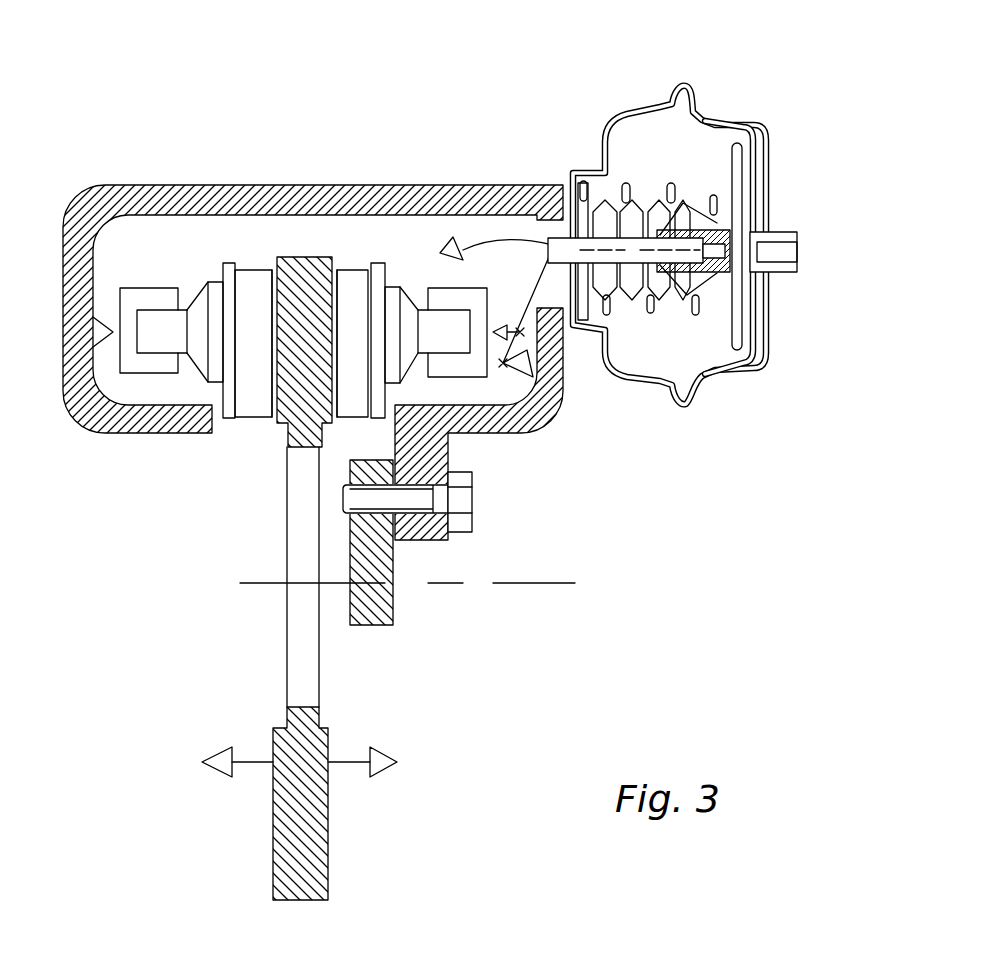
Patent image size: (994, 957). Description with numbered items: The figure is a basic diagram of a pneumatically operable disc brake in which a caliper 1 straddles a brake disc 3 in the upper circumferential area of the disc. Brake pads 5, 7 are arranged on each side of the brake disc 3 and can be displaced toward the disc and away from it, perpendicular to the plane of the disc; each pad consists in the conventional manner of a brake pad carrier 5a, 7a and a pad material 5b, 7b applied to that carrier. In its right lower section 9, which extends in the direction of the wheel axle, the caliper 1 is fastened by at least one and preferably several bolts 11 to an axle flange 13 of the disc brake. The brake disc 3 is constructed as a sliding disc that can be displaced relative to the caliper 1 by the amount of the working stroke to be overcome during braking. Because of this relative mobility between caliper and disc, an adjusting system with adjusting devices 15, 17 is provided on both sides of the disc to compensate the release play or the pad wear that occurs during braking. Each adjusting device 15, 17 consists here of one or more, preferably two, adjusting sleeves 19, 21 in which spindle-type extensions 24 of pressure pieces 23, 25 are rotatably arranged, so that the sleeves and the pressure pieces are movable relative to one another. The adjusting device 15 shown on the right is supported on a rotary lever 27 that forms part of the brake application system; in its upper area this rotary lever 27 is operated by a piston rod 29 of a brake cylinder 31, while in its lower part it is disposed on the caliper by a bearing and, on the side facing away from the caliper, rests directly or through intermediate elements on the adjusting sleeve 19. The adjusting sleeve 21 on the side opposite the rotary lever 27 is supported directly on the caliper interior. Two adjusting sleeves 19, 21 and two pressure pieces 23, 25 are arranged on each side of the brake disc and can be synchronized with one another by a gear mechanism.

The caliper 1 is at (343, 270).
The brake disc 3 is at (308, 808).
The brake pad 5 is at (380, 270).
The brake pad carrier 5a is at (392, 270).
The pad material 5b is at (365, 263).
The brake pad 7 is at (243, 270).
The brake pad carrier 7a is at (217, 270).
The pad material 7b is at (273, 278).
The right lower section 9 is at (432, 455).
The bolt 11 is at (460, 518).
The axle flange 13 is at (380, 608).
The adjusting device 15 is at (418, 270).
The adjusting device 17 is at (185, 272).
The adjusting sleeve 19 is at (447, 367).
The adjusting sleeve 21 is at (150, 367).
The pressure piece 23 is at (410, 340).
The spindle-type extension 24 is at (172, 338).
The pressure piece 25 is at (152, 333).
The rotary lever 27 is at (537, 306).
The piston rod 29 is at (624, 246).
The brake cylinder 31 is at (637, 108).